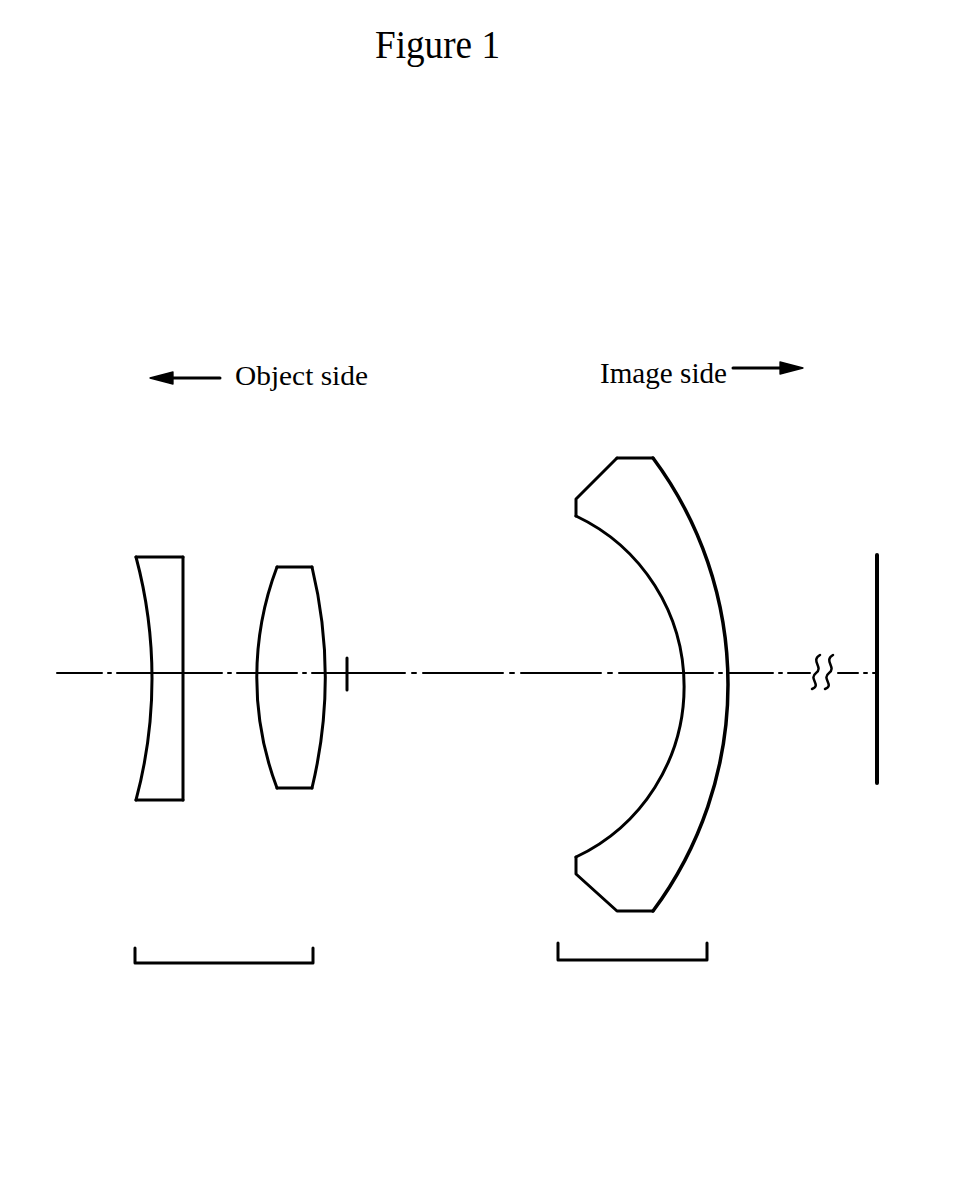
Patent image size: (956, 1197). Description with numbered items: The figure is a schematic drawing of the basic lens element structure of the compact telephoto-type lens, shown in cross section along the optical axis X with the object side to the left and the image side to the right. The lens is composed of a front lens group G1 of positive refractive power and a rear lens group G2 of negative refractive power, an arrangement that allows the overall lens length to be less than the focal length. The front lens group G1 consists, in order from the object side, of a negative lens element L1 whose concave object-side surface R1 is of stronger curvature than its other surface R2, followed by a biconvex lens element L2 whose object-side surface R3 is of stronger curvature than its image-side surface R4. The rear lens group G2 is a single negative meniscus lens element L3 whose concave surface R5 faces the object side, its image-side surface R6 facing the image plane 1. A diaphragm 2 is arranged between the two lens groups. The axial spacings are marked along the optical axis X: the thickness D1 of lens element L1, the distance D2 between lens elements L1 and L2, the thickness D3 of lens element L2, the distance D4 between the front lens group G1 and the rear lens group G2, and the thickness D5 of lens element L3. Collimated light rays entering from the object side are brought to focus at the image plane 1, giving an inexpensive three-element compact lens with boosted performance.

The negative lens element L1 is at (159, 675).
The biconvex lens element L2 is at (310, 672).
The negative meniscus lens element L3 is at (649, 653).
The object-side surface of first lens R1 is at (137, 779).
The image-side surface of first lens R2 is at (185, 777).
The object-side surface of second lens R3 is at (267, 762).
The image-side surface of second lens R4 is at (320, 767).
The object-side surface of third lens R5 is at (620, 827).
The image-side surface of third lens R6 is at (683, 871).
The axial thickness of first lens D1 is at (162, 670).
The distance between lens elements L1 and L2 D2 is at (217, 671).
The axial thickness of second lens D3 is at (283, 669).
The distance between the front lens group and the rear lens group D4 is at (455, 670).
The axial thickness of third lens D5 is at (700, 670).
The diaphragm 2 is at (350, 668).
The image plane 1 is at (876, 590).
The optical axis X is at (110, 676).
The front lens group G1 is at (224, 974).
The rear lens group G2 is at (632, 975).